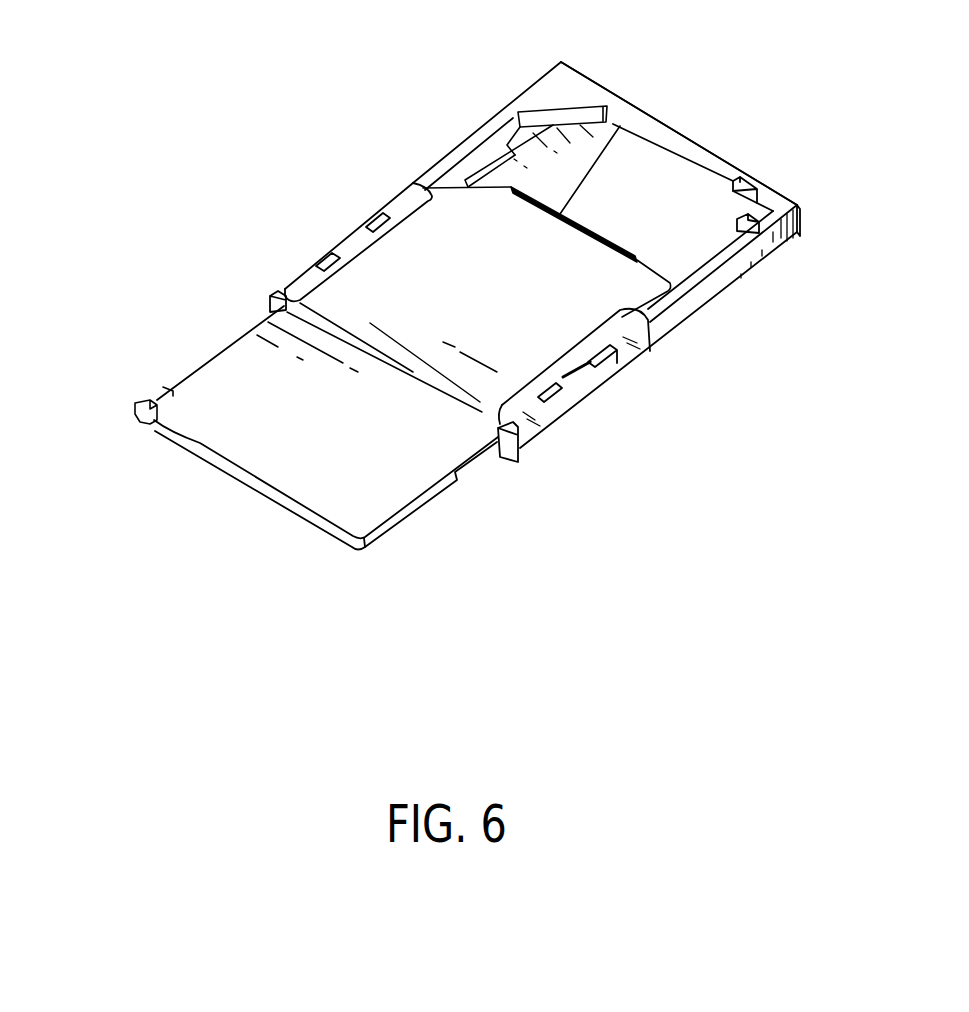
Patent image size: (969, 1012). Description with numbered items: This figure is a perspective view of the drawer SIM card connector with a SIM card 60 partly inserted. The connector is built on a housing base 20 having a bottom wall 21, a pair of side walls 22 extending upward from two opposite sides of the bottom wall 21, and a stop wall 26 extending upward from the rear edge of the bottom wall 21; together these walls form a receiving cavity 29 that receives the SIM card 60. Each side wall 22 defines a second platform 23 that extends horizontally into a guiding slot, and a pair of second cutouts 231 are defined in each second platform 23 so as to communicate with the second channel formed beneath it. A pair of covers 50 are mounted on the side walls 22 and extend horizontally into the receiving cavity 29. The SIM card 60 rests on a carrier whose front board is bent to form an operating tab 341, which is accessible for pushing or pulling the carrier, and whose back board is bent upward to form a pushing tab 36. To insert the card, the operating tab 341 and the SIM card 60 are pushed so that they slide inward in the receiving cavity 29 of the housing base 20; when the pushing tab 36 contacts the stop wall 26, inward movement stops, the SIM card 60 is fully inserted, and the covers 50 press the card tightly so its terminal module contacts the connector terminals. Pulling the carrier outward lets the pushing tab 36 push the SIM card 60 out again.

The housing base 20 is at (797, 204).
The bottom wall 21 is at (563, 143).
The side wall 22 is at (432, 172).
The second platform 23 is at (514, 143).
The second cutout 231 is at (495, 167).
The stop wall 26 is at (697, 150).
The receiving cavity 29 is at (633, 152).
The pushing tab 36 is at (573, 222).
The cover 50 is at (352, 238).
The SIM card 60 is at (357, 540).
The operating tab 341 is at (135, 408).